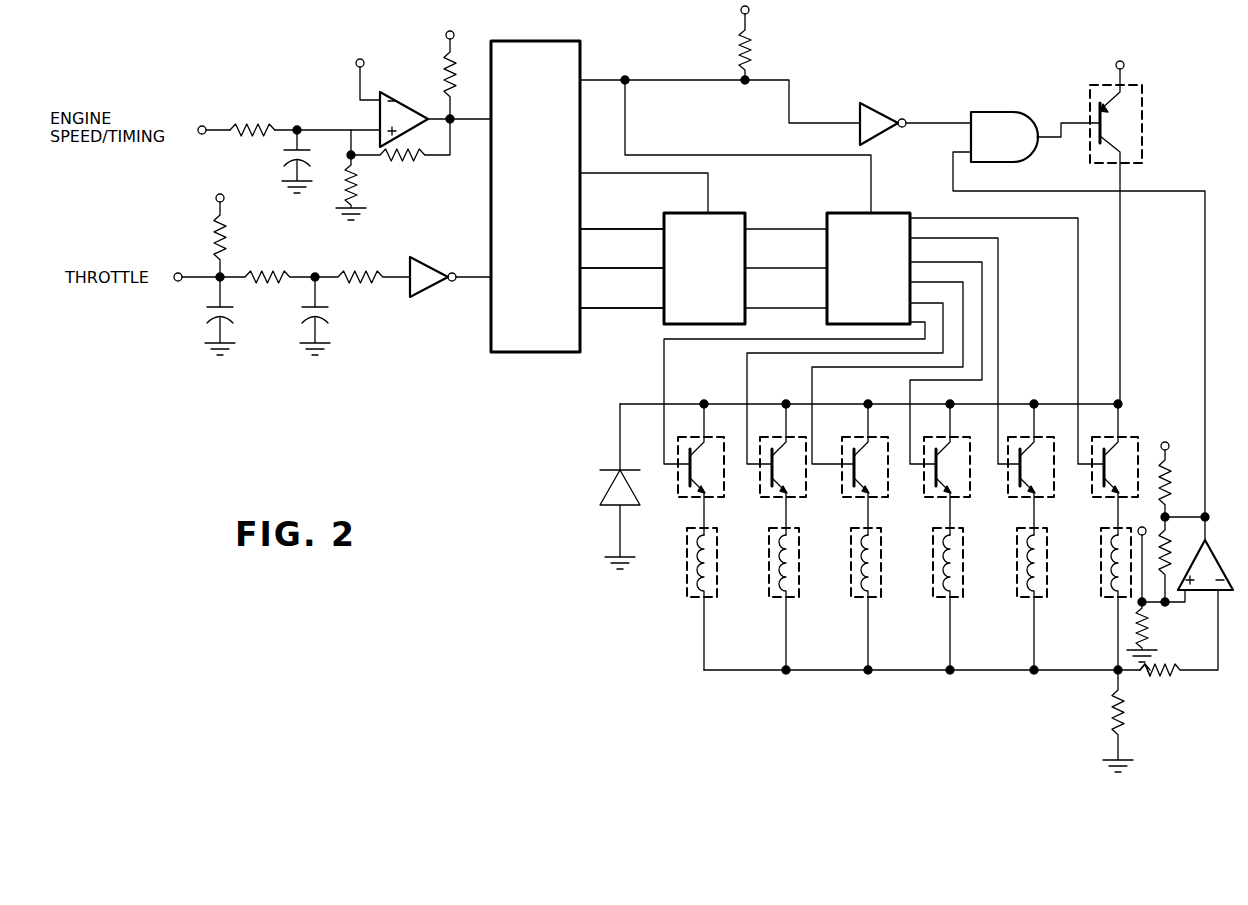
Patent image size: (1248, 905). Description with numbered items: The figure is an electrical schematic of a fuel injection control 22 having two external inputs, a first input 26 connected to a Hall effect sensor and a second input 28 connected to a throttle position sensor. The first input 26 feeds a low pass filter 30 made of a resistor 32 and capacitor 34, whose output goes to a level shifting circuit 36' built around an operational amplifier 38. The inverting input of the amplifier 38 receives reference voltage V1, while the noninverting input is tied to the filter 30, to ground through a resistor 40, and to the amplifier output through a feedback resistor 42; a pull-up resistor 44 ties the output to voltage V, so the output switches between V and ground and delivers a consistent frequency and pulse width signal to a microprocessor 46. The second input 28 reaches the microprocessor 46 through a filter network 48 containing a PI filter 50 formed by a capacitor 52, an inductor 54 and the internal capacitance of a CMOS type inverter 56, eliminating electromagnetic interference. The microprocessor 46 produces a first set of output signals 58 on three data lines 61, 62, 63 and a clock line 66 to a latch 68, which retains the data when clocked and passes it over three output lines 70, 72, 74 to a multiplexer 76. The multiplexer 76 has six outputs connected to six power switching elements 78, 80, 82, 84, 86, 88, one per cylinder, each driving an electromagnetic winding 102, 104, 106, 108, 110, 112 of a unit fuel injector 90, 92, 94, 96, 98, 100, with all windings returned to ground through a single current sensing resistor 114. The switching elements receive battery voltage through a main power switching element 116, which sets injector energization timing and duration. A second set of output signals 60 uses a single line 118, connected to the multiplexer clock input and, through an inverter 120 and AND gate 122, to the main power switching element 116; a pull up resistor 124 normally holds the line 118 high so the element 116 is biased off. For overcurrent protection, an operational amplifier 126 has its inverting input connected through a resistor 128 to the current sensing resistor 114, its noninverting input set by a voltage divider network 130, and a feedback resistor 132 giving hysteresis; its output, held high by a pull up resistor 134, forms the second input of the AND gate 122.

The fuel injection control 22 is at (358, 27).
The first input 26 is at (202, 125).
The second input 28 is at (185, 272).
The low pass filter 30 is at (303, 100).
The resistor 32 is at (257, 127).
The capacitor 34 is at (285, 151).
The level shifting circuit 36' is at (391, 54).
The operational amplifier 38 is at (406, 118).
The resistor 40 is at (357, 185).
The feedback resistor 42 is at (408, 161).
The pull-up resistor 44 is at (445, 66).
The microprocessor 46 is at (535, 196).
The filter network 48 is at (340, 353).
The PI filter 50 is at (380, 267).
The capacitor 52 is at (330, 321).
The inductor 54 is at (360, 283).
The CMOS type inverter 56 is at (424, 262).
The first set of output signals 58 is at (611, 220).
The second set of output signals 60 is at (604, 58).
The data line 61 is at (612, 232).
The data line 62 is at (612, 271).
The data line 63 is at (612, 311).
The clock line 66 is at (712, 196).
The latch 68 is at (704, 268).
The output line 70 is at (784, 227).
The output line 72 is at (770, 266).
The output line 74 is at (768, 306).
The multiplexer 76 is at (884, 338).
The power switching element 78 is at (718, 503).
The power switching element 80 is at (800, 503).
The power switching element 82 is at (883, 503).
The power switching element 84 is at (965, 503).
The power switching element 86 is at (1046, 503).
The power switching element 88 is at (1097, 504).
The unit fuel injector 90 is at (692, 605).
The unit fuel injector 92 is at (800, 598).
The unit fuel injector 94 is at (883, 600).
The unit fuel injector 96 is at (961, 605).
The unit fuel injector 98 is at (1025, 603).
The unit fuel injector 100 is at (1092, 598).
The electromagnetic winding 102 is at (687, 576).
The electromagnetic winding 104 is at (775, 600).
The electromagnetic winding 106 is at (858, 600).
The electromagnetic winding 108 is at (940, 600).
The electromagnetic winding 110 is at (1020, 575).
The electromagnetic winding 112 is at (1102, 567).
The current sensing resistor 114 is at (1125, 712).
The main power switching element 116 is at (1143, 136).
The line 118 is at (648, 80).
The inverter 120 is at (883, 108).
The AND gate 122 is at (1018, 120).
The pull up resistor 124 is at (751, 50).
The operational amplifier 126 is at (1212, 560).
The resistor 128 is at (1178, 672).
The voltage divider network 130 is at (1136, 598).
The feedback resistor 132 is at (1169, 600).
The pull up resistor 134 is at (1168, 440).